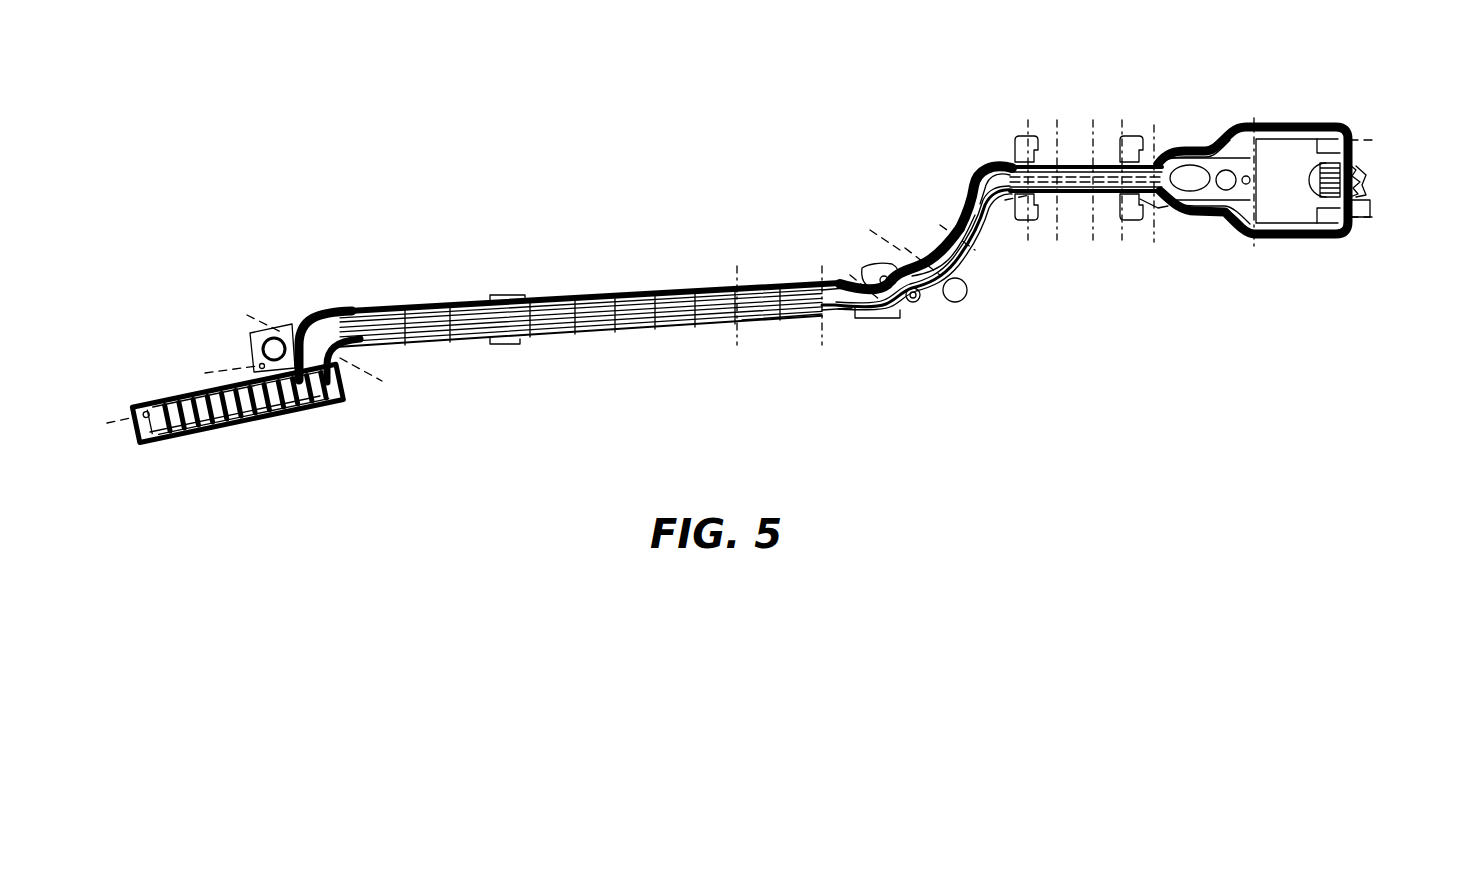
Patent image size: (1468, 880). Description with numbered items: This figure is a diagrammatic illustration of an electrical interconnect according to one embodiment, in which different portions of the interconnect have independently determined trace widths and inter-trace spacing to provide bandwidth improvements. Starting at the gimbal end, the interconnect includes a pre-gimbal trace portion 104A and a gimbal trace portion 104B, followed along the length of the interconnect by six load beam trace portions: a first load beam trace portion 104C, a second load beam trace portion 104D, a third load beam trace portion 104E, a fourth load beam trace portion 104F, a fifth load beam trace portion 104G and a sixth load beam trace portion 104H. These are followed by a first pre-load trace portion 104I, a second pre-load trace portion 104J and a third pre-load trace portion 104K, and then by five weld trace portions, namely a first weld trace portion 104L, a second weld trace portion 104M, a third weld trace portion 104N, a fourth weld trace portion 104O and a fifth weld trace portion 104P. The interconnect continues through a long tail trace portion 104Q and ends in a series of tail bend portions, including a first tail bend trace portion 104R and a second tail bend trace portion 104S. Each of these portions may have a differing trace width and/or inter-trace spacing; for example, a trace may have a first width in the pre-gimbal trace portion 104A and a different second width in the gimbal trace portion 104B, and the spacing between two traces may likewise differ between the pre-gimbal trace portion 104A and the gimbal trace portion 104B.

The pre-gimbal trace portion 104A is at (1353, 150).
The gimbal trace portion 104B is at (1290, 130).
The first load beam trace portion 104C is at (1223, 147).
The second load beam trace portion 104D is at (1186, 208).
The third load beam trace portion 104E is at (1138, 200).
The fourth load beam trace portion 104F is at (1106, 166).
The fifth load beam trace portion 104G is at (1087, 166).
The sixth load beam trace portion 104H is at (1046, 198).
The first pre-load trace portion 104I is at (975, 160).
The second pre-load trace portion 104J is at (960, 220).
The third pre-load trace portion 104K is at (940, 255).
The first weld trace portion 104L is at (905, 270).
The second weld trace portion 104M is at (875, 275).
The third weld trace portion 104N is at (877, 316).
The fourth weld trace portion 104O is at (831, 317).
The fifth weld trace portion 104P is at (766, 324).
The tail trace portion 104Q is at (492, 303).
The first tail bend trace portion 104R is at (270, 347).
The second tail bend trace portion 104S is at (196, 389).